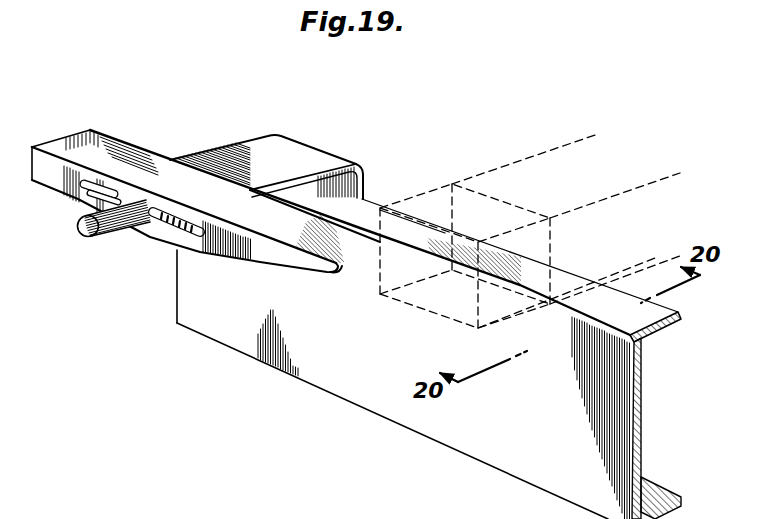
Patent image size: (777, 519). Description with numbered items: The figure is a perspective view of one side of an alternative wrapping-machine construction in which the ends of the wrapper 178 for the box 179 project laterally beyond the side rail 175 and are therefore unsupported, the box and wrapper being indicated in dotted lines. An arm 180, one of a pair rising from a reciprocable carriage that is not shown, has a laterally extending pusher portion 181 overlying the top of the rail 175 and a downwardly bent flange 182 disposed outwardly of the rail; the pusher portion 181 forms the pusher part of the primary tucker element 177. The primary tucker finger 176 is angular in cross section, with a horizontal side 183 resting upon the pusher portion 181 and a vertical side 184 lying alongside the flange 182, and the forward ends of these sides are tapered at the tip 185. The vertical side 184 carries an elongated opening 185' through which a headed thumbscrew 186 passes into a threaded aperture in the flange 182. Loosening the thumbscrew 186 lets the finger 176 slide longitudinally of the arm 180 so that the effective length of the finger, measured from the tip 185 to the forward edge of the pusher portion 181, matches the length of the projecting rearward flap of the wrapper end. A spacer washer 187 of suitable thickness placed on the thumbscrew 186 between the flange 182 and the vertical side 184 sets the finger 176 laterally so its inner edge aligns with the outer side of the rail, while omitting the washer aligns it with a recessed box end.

The side rail 175 is at (193, 318).
The primary tucker finger 176 is at (123, 140).
The primary tucker element 177 is at (290, 203).
The wrapper 178 is at (407, 306).
The box 179 is at (467, 203).
The arm 180 is at (367, 180).
The pusher portion 181 is at (295, 157).
The flange 182 is at (178, 232).
The horizontal side 183 is at (78, 141).
The vertical side 184 is at (250, 256).
The tapered forward end 185 is at (330, 296).
The elongated opening 185' is at (60, 206).
The headed thumbscrew 186 is at (92, 229).
The spacer washer 187 is at (158, 222).